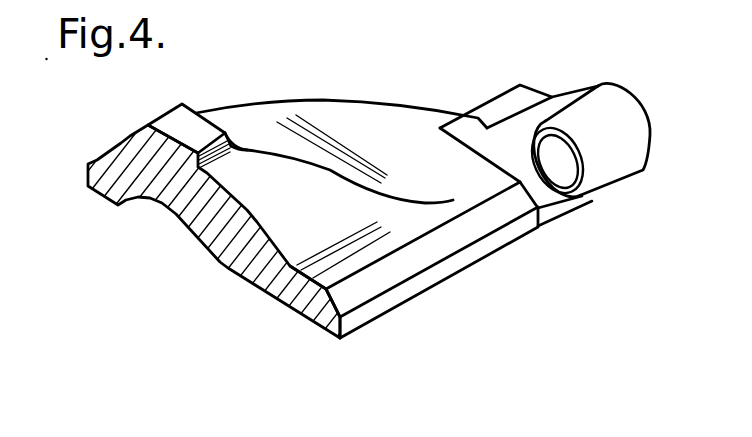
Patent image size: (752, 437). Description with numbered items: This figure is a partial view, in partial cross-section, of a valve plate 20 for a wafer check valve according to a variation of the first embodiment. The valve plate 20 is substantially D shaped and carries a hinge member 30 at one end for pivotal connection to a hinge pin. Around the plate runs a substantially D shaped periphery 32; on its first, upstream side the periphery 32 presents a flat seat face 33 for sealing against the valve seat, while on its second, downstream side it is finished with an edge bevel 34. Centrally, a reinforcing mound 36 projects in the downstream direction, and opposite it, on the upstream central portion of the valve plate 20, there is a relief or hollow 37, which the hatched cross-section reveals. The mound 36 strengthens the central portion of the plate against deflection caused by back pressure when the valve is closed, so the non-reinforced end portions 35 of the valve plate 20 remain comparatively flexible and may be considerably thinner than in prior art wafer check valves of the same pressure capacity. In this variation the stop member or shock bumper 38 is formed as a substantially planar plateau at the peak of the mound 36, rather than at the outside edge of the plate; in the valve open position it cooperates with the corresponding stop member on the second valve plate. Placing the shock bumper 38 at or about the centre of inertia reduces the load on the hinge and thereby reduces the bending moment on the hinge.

The valve plate 20 is at (393, 110).
The hinge member 30 is at (637, 138).
The D shaped periphery 32 is at (327, 308).
The flat seat face 33 is at (320, 335).
The edge bevel 34 is at (446, 242).
The non-reinforced end portions 35 is at (447, 160).
The mound 36 is at (247, 131).
The relief or hollow 37 is at (177, 213).
The stop member or shock bumper 38 is at (189, 114).